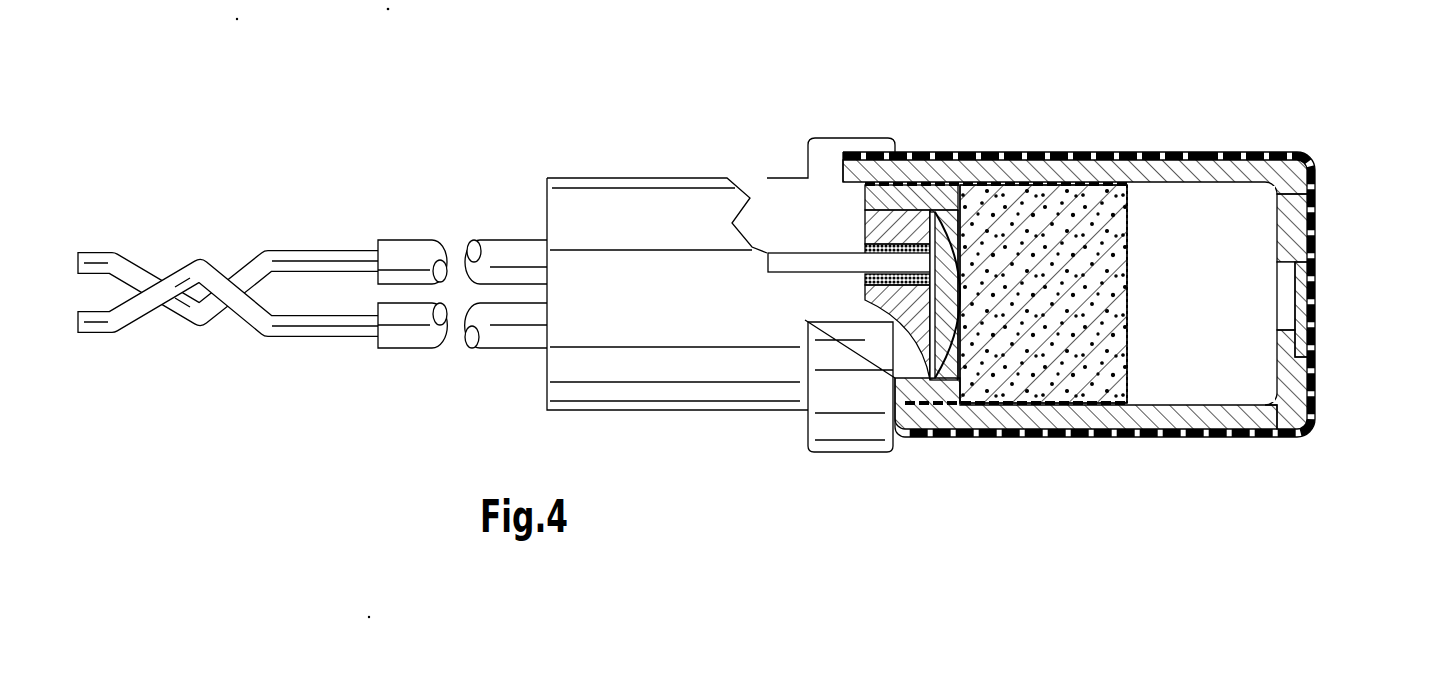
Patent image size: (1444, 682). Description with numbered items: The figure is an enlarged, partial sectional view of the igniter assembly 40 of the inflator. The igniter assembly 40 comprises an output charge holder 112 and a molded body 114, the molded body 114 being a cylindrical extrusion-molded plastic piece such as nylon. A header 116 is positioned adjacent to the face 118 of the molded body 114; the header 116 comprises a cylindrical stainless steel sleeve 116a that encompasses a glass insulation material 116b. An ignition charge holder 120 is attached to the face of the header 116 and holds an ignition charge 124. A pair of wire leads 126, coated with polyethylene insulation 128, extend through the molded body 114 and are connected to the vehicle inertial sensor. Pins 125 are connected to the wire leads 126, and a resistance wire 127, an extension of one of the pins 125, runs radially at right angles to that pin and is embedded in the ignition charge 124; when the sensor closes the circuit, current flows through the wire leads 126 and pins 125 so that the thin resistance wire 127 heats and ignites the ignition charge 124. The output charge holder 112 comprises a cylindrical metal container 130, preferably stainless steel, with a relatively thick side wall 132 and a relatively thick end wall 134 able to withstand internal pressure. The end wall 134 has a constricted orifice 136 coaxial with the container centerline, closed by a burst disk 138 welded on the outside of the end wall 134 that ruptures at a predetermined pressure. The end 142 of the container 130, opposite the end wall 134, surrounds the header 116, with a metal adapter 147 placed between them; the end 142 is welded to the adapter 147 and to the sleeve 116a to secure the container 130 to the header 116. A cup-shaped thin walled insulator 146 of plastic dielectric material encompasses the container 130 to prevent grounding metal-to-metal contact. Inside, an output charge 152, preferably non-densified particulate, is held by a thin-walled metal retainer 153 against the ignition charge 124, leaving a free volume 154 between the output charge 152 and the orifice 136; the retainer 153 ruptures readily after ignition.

The igniter assembly 40 is at (851, 506).
The output charge holder 112 is at (1167, 515).
The molded body 114 is at (692, 438).
The header 116 is at (883, 203).
The cylindrical stainless steel sleeve 116a is at (910, 235).
The glass insulation material 116b is at (892, 318).
The face of the molded body 118 is at (865, 244).
The ignition charge holder 120 is at (942, 358).
The ignition charge 124 is at (965, 262).
The pins 125 is at (832, 328).
The wire leads 126 is at (350, 256).
The resistance wire 127 is at (945, 275).
The polyethylene insulation 128 is at (494, 258).
The cylindrical metal container 130 is at (1102, 145).
The side wall 132 is at (1168, 180).
The end wall 134 is at (1283, 222).
The constricted orifice 136 is at (1300, 312).
The burst disk 138 is at (1310, 296).
The end of the container 142 is at (855, 160).
The cup-shaped thin walled insulator 146 is at (1240, 156).
The metal adapter 147 is at (940, 250).
The output charge 152 is at (1037, 367).
The retainer 153 is at (1087, 407).
The free volume 154 is at (1197, 375).